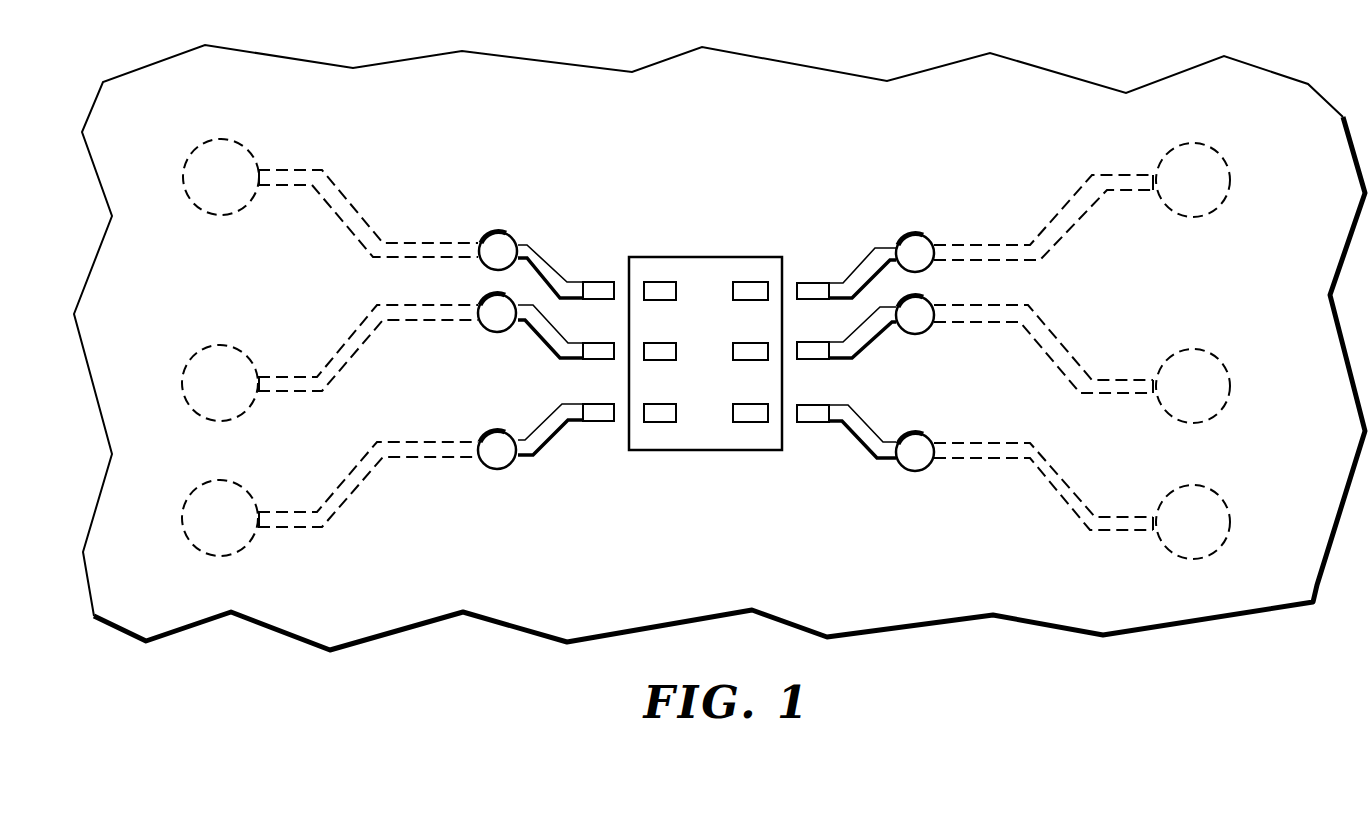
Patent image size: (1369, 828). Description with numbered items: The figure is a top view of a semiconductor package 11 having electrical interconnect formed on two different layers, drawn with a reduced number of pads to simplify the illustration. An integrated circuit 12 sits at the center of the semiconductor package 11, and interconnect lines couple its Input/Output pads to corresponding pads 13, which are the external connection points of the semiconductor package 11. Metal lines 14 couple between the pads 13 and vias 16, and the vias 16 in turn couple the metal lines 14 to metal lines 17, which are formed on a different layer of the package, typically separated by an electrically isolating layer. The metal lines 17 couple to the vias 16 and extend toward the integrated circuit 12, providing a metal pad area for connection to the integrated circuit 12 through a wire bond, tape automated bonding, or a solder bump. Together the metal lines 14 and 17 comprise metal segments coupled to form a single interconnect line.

The semiconductor package 11 is at (727, 538).
The integrated circuit 12 is at (716, 334).
The pads 13 is at (600, 284).
The metal lines 14 is at (549, 266).
The vias 16 is at (502, 236).
The metal lines 17 is at (340, 342).